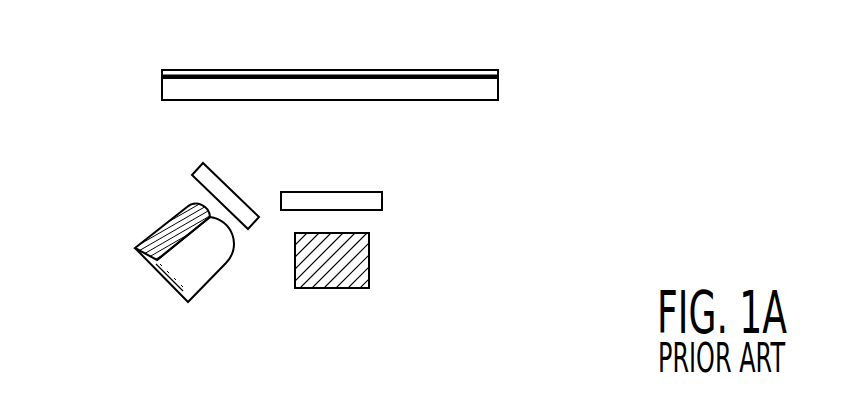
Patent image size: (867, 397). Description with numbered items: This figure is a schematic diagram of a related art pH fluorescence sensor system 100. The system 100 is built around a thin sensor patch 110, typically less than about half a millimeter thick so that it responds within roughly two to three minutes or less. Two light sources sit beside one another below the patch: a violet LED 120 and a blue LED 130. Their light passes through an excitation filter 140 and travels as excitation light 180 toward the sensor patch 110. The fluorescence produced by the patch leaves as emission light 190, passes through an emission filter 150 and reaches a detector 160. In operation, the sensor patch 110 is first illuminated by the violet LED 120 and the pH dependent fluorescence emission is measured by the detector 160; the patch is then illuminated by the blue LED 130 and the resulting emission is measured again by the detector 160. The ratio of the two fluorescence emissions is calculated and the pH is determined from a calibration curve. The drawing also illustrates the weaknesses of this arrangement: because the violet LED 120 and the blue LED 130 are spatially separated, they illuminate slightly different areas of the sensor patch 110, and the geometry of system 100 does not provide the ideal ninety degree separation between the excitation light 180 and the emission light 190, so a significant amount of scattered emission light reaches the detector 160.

The pH fluorescence sensor system 100 is at (347, 30).
The sensor patch 110 is at (172, 88).
The violet LED 120 is at (147, 243).
The blue LED 130 is at (205, 277).
The excitation filter 140 is at (197, 174).
The emission filter 150 is at (373, 201).
The detector 160 is at (360, 273).
The excitation light 180 is at (290, 167).
The emission light 190 is at (380, 141).